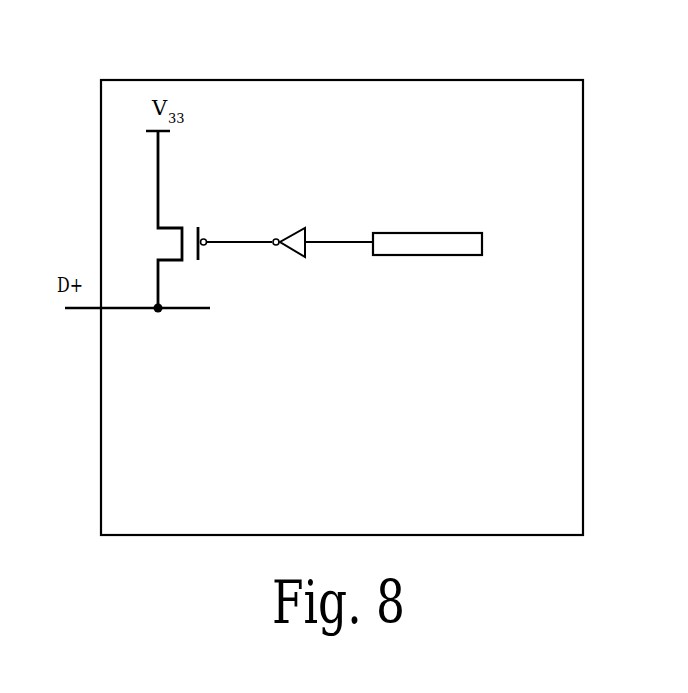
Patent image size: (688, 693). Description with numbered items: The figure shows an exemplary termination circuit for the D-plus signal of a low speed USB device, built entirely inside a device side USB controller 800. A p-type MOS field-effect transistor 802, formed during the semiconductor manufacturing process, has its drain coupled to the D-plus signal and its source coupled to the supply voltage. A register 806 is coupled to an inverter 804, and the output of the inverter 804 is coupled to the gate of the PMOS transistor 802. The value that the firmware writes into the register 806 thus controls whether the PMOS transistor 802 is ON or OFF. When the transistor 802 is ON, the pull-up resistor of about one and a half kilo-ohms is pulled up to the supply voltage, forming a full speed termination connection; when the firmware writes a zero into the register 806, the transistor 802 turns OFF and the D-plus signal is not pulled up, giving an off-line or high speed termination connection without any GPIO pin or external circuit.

The device side USB controller 800 is at (352, 80).
The PMOS transistor 802 is at (190, 223).
The inverter 804 is at (300, 228).
The register 806 is at (405, 233).